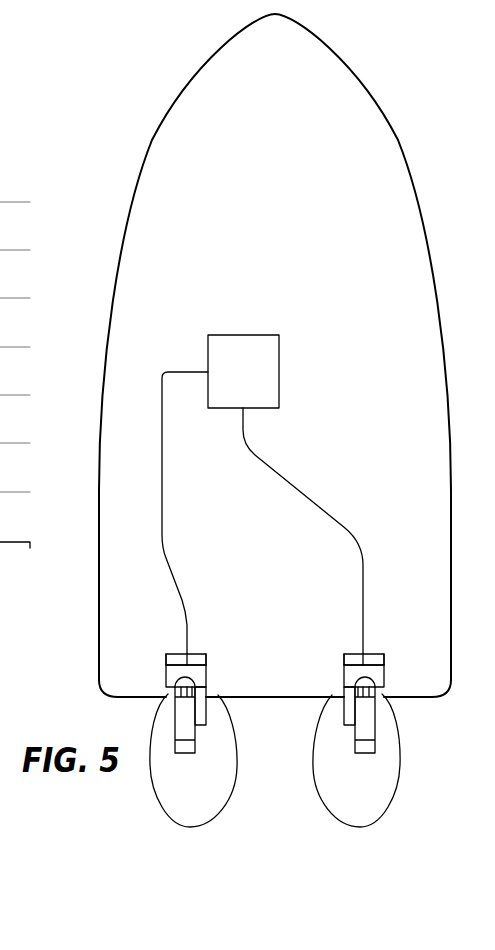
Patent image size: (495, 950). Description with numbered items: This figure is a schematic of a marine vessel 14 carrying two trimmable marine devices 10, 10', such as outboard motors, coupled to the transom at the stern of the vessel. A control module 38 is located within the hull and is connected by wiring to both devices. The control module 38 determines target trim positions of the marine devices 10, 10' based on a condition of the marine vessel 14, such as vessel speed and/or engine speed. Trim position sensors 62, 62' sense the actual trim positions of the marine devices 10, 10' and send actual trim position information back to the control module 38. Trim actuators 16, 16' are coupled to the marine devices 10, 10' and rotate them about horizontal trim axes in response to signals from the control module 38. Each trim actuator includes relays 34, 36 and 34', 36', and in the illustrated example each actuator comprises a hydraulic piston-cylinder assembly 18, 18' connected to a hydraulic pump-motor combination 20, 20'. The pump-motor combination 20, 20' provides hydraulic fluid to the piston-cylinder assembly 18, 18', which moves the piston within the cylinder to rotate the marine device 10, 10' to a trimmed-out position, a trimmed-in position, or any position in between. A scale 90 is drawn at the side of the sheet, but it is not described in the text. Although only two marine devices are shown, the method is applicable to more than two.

The marine vessel 14 is at (406, 172).
The scale markings 90 is at (21, 387).
The control module 38 is at (256, 381).
The trim actuator 16 is at (197, 723).
The hydraulic pump-motor combination 20 is at (207, 661).
The relay 34 is at (165, 636).
The relay 36 is at (209, 636).
The hydraulic piston-cylinder assembly 18 is at (228, 734).
The trim position sensor 62 is at (232, 715).
The marine device 10 is at (213, 766).
The trim actuator 16' is at (370, 717).
The hydraulic pump-motor combination 20' is at (338, 661).
The relay 34' is at (340, 636).
The relay 36' is at (387, 636).
The hydraulic piston-cylinder assembly 18' is at (404, 715).
The trim position sensor 62' is at (317, 716).
The marine device 10' is at (387, 760).